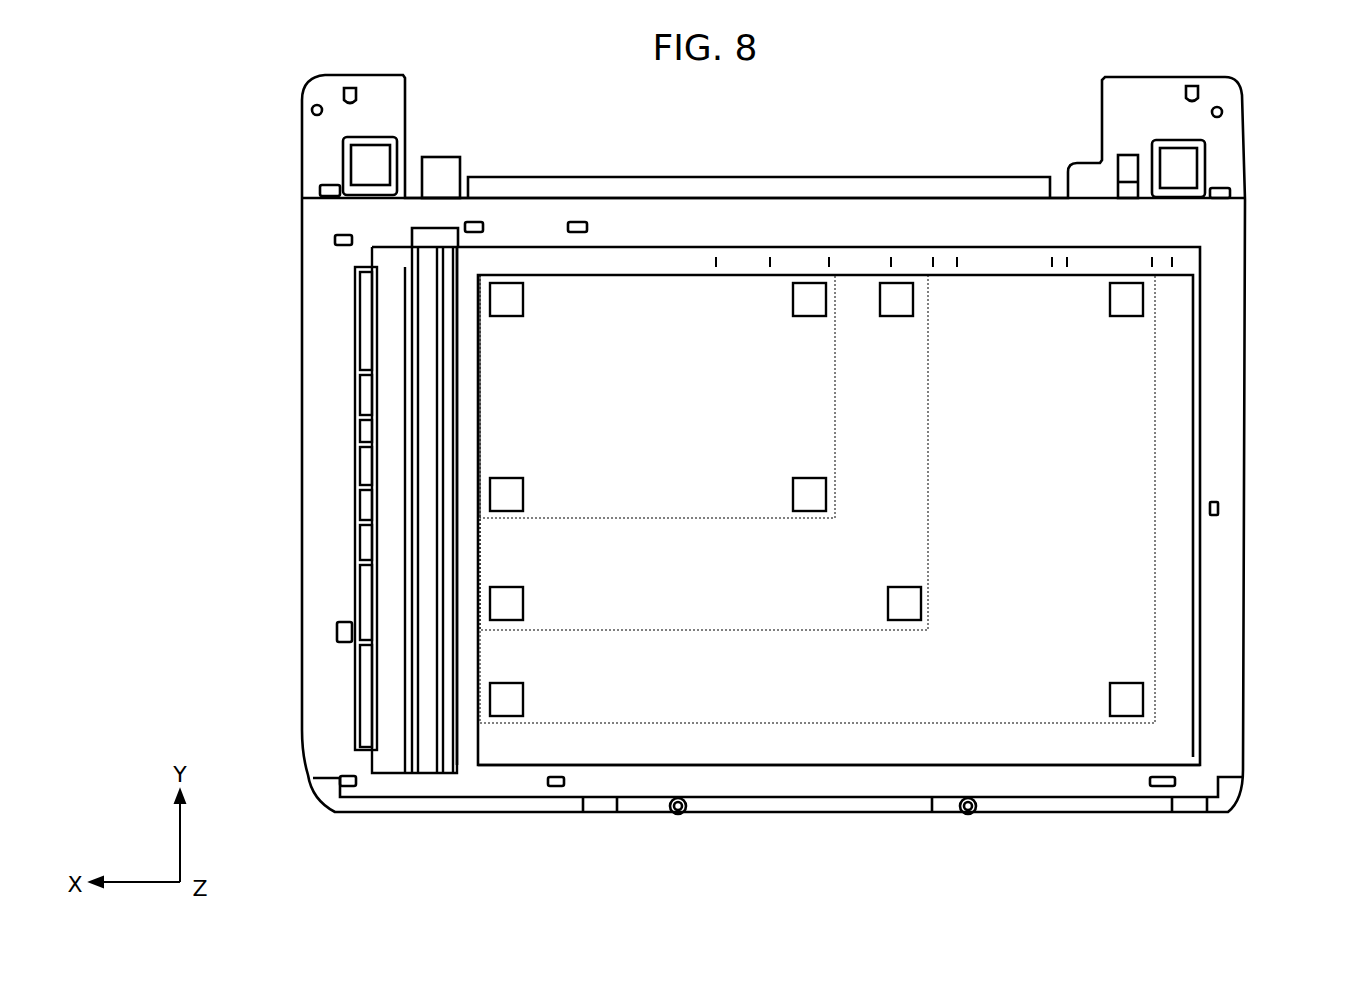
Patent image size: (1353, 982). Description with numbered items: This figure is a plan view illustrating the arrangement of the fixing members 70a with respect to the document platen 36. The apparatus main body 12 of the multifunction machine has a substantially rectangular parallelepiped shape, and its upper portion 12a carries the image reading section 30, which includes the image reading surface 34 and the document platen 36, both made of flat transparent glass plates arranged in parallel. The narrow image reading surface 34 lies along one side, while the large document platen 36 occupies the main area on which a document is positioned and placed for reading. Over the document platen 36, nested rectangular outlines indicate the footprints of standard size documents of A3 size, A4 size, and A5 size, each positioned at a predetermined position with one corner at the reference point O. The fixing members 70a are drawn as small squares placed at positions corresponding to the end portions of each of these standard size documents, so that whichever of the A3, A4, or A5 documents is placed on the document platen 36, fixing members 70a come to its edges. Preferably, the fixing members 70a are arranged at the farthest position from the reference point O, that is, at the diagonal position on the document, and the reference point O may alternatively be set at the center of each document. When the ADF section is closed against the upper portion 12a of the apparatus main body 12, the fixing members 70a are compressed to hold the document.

The apparatus main body 12 is at (1245, 462).
The upper portion of the apparatus main body 12a is at (1175, 240).
The image reading section 30 is at (634, 765).
The image reading surface 34 is at (390, 753).
The document platen 36 is at (588, 737).
The fixing members 70a is at (523, 298).
The A3 size A3 is at (1155, 680).
The A4 size A4 is at (928, 593).
The A5 size A5 is at (835, 425).
The reference point O is at (480, 280).